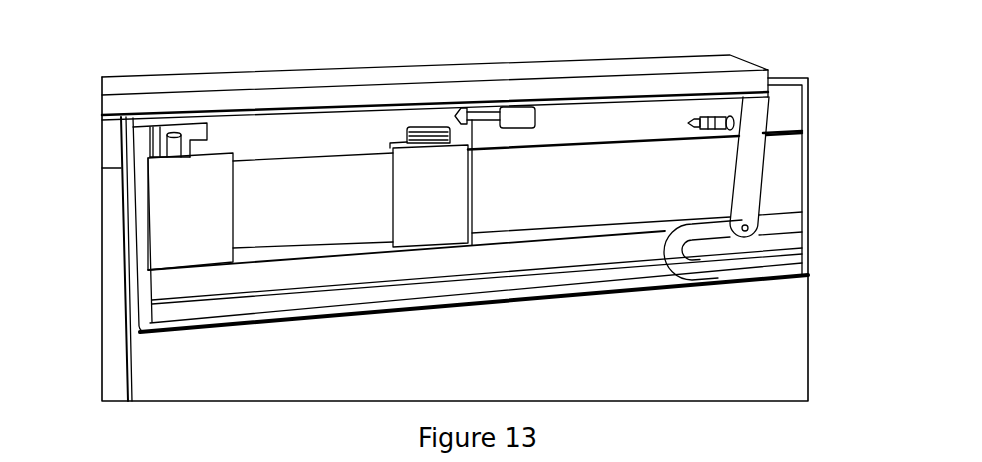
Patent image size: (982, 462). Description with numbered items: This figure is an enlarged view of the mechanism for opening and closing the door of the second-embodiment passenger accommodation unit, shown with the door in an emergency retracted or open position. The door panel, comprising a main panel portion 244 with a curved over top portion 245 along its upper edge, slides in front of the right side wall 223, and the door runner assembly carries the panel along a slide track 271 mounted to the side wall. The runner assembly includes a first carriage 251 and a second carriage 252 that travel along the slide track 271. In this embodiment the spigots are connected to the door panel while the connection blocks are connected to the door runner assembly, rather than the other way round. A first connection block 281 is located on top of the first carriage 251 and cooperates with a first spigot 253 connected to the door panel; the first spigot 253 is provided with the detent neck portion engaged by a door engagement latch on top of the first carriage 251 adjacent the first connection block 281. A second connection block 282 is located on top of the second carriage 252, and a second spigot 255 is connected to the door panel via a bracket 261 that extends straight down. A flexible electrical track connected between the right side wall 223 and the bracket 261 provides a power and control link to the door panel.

The right side wall 223 is at (793, 358).
The main panel portion 244 is at (113, 307).
The curved over top portion 245 is at (147, 86).
The first carriage 251 is at (204, 231).
The second carriage 252 is at (450, 211).
The first spigot 253 is at (487, 113).
The second spigot 255 is at (716, 121).
The bracket 261 is at (747, 170).
The slide track 271 is at (624, 206).
The first connection block 281 is at (208, 125).
The second connection block 282 is at (420, 126).